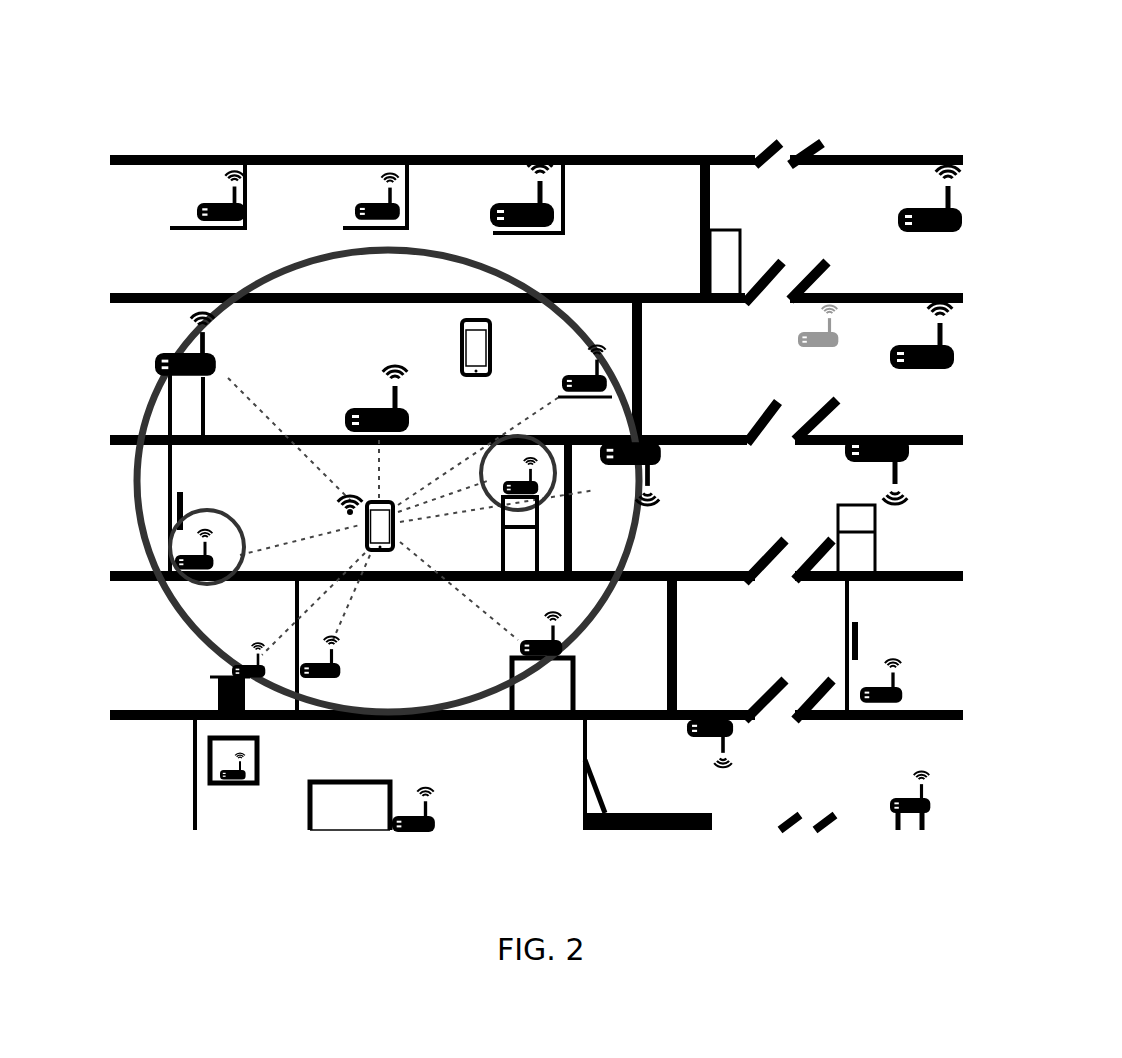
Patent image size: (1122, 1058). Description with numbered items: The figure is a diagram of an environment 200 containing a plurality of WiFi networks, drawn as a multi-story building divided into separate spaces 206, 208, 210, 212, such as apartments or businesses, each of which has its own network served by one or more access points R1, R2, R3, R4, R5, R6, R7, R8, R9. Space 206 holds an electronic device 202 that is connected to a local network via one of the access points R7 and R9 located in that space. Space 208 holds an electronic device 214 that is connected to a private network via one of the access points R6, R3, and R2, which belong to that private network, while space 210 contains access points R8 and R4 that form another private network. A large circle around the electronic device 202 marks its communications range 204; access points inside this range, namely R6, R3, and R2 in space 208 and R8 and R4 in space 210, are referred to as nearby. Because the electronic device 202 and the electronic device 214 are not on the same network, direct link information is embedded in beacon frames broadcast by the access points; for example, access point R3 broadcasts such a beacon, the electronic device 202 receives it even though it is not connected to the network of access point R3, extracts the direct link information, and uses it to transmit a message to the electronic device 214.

The environment 200 is at (1044, 101).
The electronic device 202 is at (386, 537).
The communications range 204 is at (136, 396).
The space 206 is at (223, 473).
The space 208 is at (407, 385).
The space 210 is at (577, 686).
The space 212 is at (670, 264).
The electronic device 214 is at (472, 353).
The access point R1 is at (625, 492).
The access point R2 is at (577, 367).
The access point R3 is at (377, 387).
The access point R4 is at (540, 622).
The access point R5 is at (218, 679).
The access point R6 is at (203, 344).
The access point R7 is at (211, 547).
The access point R8 is at (344, 657).
The access point R9 is at (518, 506).